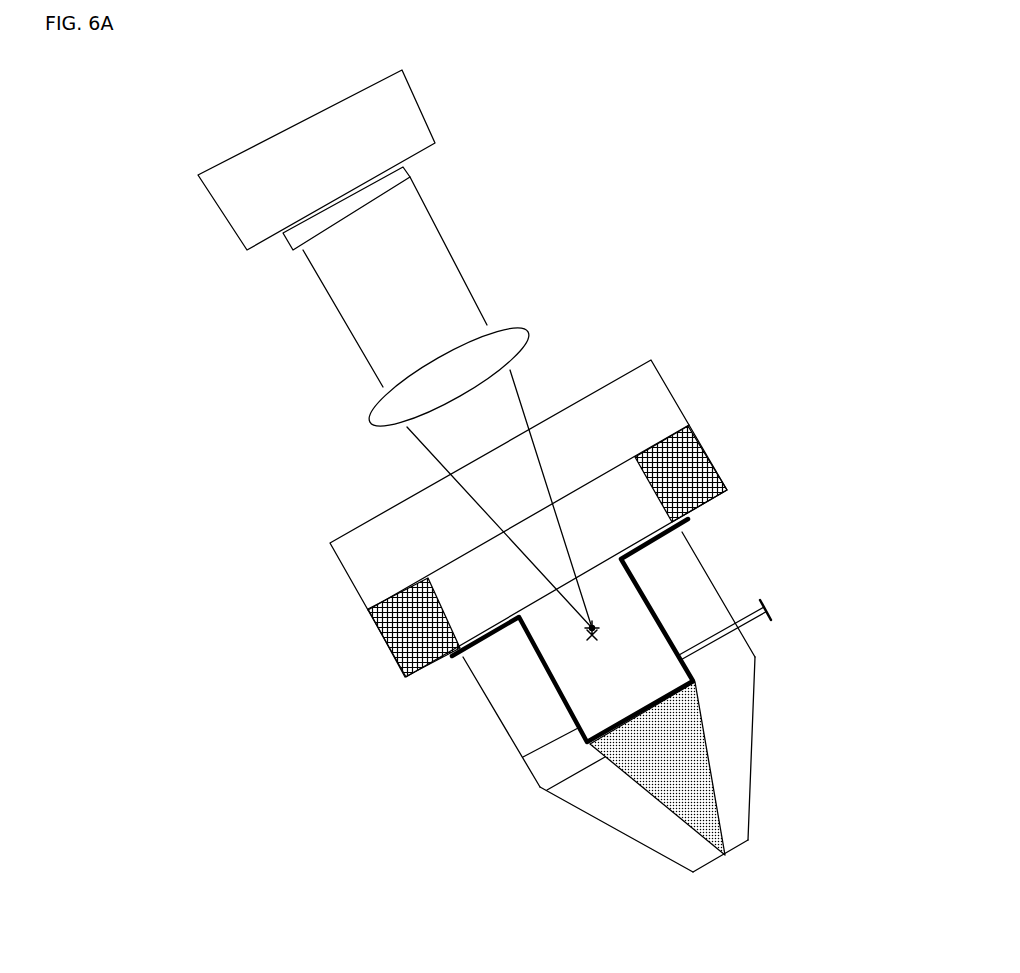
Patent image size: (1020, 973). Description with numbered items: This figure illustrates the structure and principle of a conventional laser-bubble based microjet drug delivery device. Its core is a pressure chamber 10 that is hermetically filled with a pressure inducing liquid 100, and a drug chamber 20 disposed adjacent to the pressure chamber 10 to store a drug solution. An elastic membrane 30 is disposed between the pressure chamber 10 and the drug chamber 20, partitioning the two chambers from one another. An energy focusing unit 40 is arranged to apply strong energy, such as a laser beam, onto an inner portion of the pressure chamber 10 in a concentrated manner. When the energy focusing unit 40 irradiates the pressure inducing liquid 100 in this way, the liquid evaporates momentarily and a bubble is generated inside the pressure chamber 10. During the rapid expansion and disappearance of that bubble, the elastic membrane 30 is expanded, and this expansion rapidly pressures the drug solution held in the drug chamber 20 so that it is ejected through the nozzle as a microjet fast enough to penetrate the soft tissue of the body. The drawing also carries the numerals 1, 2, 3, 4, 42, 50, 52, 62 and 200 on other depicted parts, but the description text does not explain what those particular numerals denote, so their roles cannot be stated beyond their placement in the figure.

The housing 1 is at (520, 773).
The container 2 is at (525, 662).
The heating element 3 is at (710, 457).
The body block 4 is at (680, 400).
The pressure chamber 10 is at (660, 598).
The drug chamber 20 is at (692, 745).
The elastic membrane 30 is at (518, 758).
The energy focusing unit 40 is at (740, 832).
The nozzle outlet 42 is at (713, 847).
The light source 50 is at (420, 107).
The lens 52 is at (510, 330).
The electrode pin 62 is at (730, 650).
The pressure inducing liquid 100 is at (503, 587).
The jet 200 is at (625, 782).